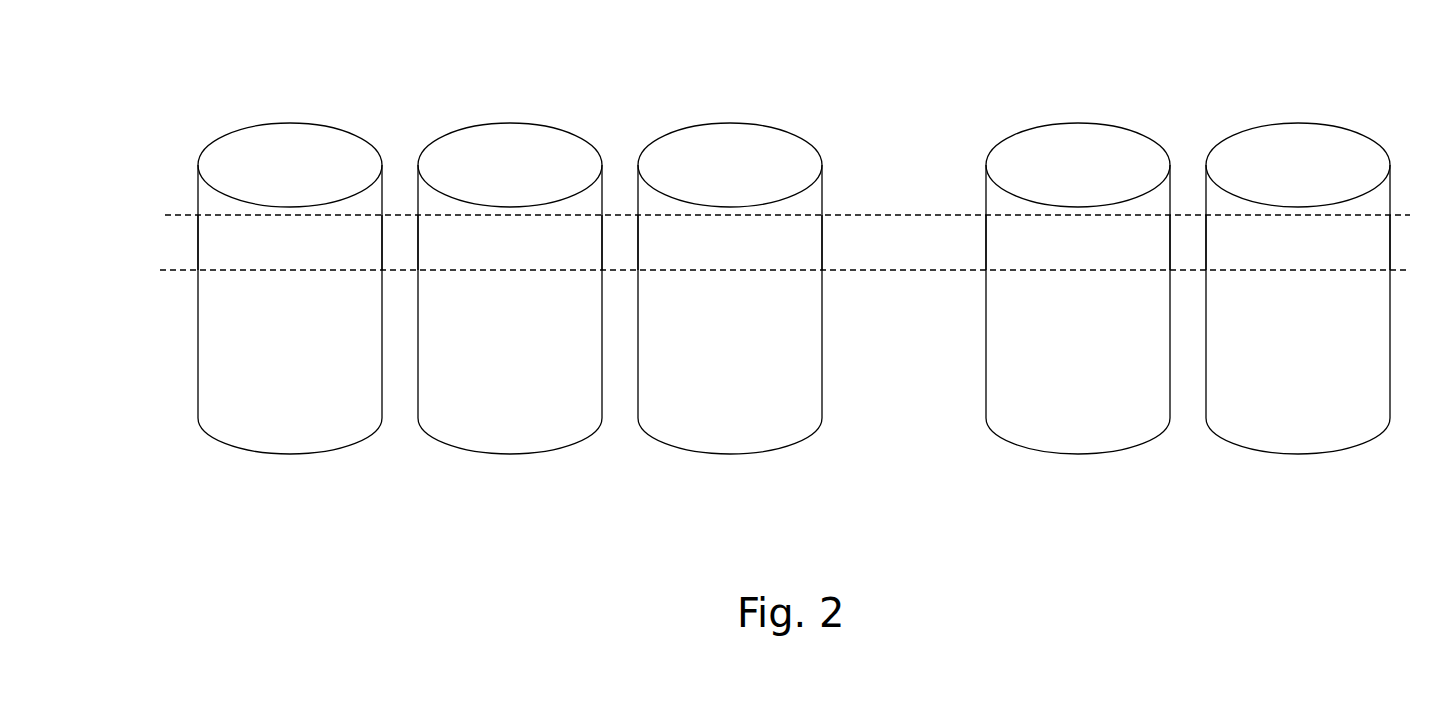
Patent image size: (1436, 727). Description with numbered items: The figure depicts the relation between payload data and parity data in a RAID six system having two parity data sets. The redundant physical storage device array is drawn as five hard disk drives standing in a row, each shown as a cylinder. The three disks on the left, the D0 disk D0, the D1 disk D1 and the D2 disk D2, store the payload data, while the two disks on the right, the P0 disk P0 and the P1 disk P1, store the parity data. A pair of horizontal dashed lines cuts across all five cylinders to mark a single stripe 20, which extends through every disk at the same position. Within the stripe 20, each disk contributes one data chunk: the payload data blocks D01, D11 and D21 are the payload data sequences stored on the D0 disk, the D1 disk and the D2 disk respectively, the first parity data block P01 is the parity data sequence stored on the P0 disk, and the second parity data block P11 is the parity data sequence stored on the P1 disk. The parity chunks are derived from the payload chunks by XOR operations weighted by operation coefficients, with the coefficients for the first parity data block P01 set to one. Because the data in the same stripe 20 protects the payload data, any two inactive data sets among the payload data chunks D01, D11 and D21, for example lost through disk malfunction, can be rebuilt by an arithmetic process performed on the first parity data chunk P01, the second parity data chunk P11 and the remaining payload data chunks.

The stripe 20 is at (158, 203).
The D0 disk D0 is at (290, 260).
The D1 disk D1 is at (510, 260).
The D2 disk D2 is at (730, 260).
The P0 disk P0 is at (1078, 260).
The P1 disk P1 is at (1298, 260).
The payload data block D01 is at (290, 242).
The payload data block D11 is at (510, 242).
The payload data block D21 is at (730, 242).
The first parity data block P01 is at (1078, 242).
The second parity data block P11 is at (1298, 242).